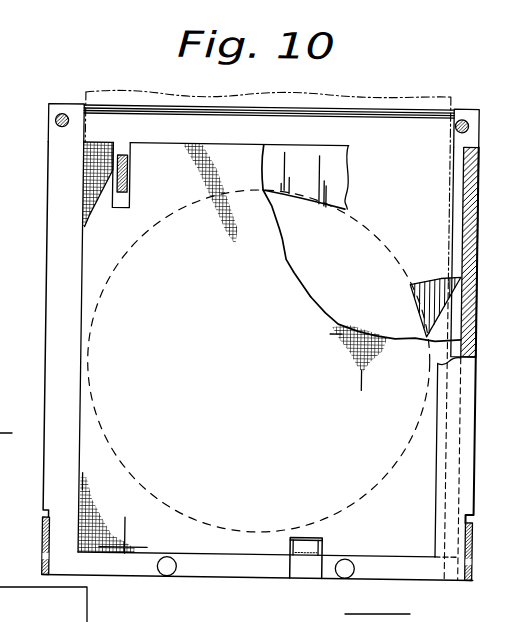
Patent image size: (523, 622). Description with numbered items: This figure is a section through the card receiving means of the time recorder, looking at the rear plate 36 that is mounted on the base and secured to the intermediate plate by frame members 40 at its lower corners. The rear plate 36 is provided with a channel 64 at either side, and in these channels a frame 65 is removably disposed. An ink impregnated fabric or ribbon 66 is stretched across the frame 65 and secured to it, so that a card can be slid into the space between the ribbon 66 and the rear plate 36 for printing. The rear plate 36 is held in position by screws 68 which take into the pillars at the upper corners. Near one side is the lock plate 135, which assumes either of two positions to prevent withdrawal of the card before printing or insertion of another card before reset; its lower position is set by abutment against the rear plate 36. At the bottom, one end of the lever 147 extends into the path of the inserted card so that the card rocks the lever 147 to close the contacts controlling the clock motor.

The rear plate 36 is at (290, 237).
The frame members 40 is at (44, 537).
The channel 64 is at (458, 201).
The frame 65 is at (425, 279).
The ribbon 66 is at (302, 290).
The screws 68 is at (61, 116).
The lock plate 135 is at (126, 177).
The lever 147 is at (310, 556).